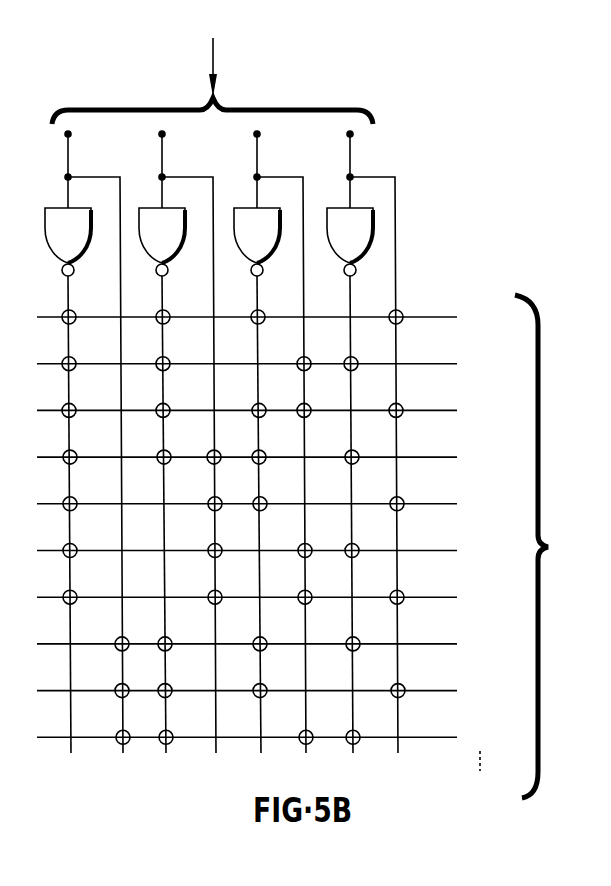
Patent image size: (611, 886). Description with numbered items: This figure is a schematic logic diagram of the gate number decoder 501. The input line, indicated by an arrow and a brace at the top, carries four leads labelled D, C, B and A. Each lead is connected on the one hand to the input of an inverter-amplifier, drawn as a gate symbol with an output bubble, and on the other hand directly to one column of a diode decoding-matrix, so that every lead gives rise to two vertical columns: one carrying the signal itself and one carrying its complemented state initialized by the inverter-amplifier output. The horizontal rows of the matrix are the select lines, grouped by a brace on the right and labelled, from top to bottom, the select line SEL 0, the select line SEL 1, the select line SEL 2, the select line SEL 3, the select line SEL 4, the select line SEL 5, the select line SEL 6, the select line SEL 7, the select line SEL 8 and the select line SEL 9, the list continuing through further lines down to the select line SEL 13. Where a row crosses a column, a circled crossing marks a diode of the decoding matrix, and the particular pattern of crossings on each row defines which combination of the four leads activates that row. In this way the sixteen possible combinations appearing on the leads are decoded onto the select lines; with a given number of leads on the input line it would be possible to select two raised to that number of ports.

The gate number decoder 501 is at (318, 418).
The select line SEL 0 is at (280, 318).
The select line SEL 1 is at (280, 365).
The select line SEL 2 is at (280, 411).
The select line SEL 3 is at (280, 458).
The select line SEL 4 is at (280, 505).
The select line SEL 5 is at (280, 552).
The select line SEL 6 is at (280, 598).
The select line SEL 7 is at (280, 645).
The select line SEL 8 is at (280, 692).
The select line SEL 9 is at (280, 738).
The select line SEL 13 is at (499, 769).